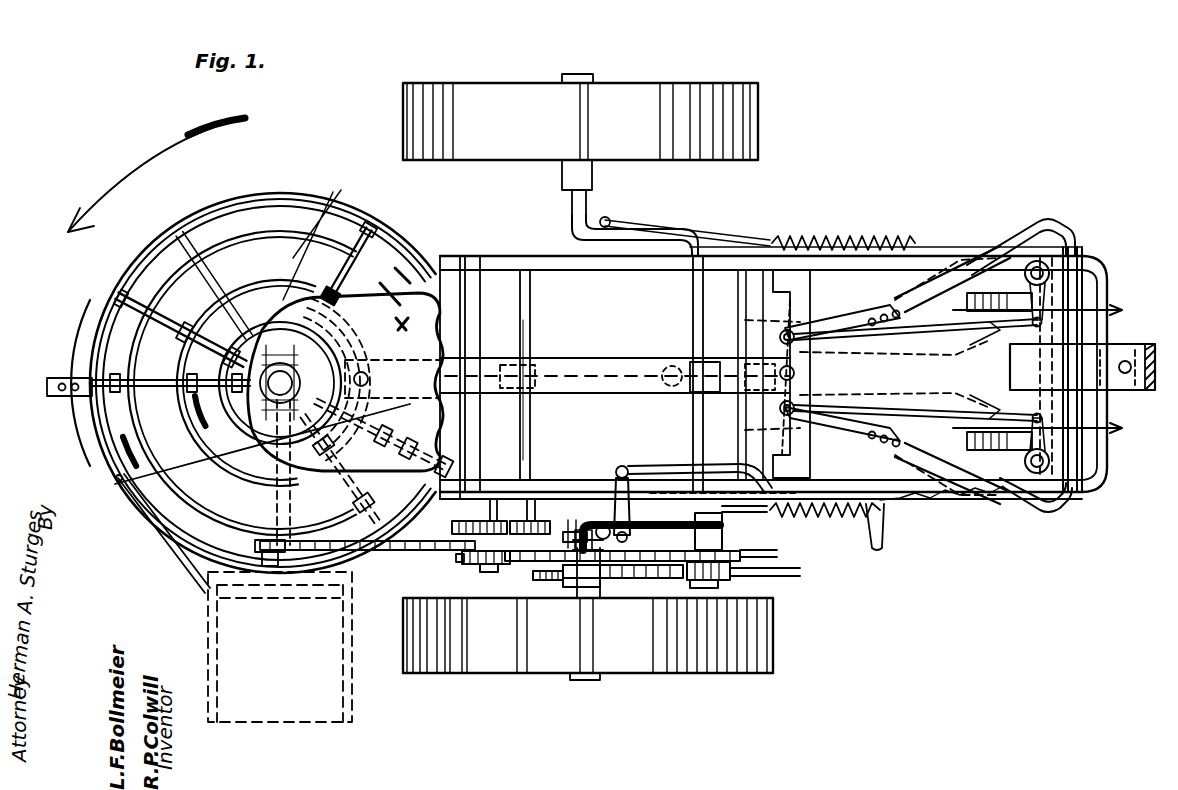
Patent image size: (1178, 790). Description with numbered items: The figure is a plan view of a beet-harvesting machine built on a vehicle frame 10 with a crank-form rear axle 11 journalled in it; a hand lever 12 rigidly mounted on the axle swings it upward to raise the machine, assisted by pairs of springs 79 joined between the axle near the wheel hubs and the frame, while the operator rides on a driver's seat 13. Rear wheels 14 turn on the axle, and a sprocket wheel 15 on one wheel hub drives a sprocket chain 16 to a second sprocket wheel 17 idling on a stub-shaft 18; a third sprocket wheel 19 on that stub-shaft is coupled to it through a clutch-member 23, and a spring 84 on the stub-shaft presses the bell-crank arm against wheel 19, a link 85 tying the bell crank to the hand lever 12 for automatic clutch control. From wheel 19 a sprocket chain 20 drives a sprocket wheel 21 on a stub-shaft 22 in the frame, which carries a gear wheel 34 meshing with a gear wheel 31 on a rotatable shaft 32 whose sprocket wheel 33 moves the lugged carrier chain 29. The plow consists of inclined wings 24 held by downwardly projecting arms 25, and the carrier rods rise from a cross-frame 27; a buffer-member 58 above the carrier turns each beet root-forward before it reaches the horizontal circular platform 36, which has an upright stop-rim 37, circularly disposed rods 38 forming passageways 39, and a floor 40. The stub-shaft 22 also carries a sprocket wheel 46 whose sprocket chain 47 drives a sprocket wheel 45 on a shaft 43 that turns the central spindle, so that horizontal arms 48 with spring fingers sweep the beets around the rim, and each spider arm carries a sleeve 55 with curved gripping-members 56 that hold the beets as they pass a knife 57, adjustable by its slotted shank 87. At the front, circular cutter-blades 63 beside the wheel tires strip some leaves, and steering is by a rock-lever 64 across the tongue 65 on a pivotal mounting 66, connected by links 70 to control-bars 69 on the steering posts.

The frame 10 is at (582, 270).
The rear axle 11 is at (692, 290).
The hand lever 12 is at (885, 540).
The driver's seat 13 is at (395, 300).
The rear wheels 14 is at (510, 150).
The sprocket wheel 15 is at (566, 559).
The sprocket chain 16 is at (625, 574).
The second sprocket wheel 17 is at (730, 570).
The stub-shaft 18 is at (690, 583).
The third sprocket wheel 19 is at (758, 548).
The sprocket chain 20 is at (530, 553).
The sprocket wheel 21 is at (463, 563).
The stub-shaft 22 is at (490, 573).
The clutch-member 23 is at (771, 567).
The inclined wings 24 is at (945, 285).
The arms 25 is at (1022, 240).
The cross-frame 27 is at (746, 318).
The sprocket chain 29 is at (582, 364).
The gear wheel 31 is at (548, 521).
The rotatable shaft 32 is at (532, 430).
The sprocket wheel 33 is at (505, 364).
The gear wheel 34 is at (452, 525).
The circular platform 36 is at (264, 359).
The stop-rim 37 is at (283, 193).
The rods 38 is at (184, 233).
The passageways 39 is at (270, 326).
The floor 40 is at (190, 556).
The shaft 43 is at (277, 500).
The sprocket wheel 45 is at (255, 548).
The sprocket wheel 46 is at (462, 556).
The sprocket chain 47 is at (410, 550).
The horizontal arms 48 is at (148, 298).
The sleeve 55 is at (340, 282).
The gripping-members 56 is at (120, 437).
The knife 57 is at (92, 372).
The buffer-member 58 is at (770, 432).
The circular cutter-blades 63 is at (1120, 444).
The rock-lever 64 is at (800, 345).
The tongue 65 is at (1125, 360).
The pivotal mounting 66 is at (800, 376).
The control-bars 69 is at (1030, 318).
The links 70 is at (1010, 326).
The springs 79 is at (835, 246).
The spring 84 is at (722, 530).
The link 85 is at (625, 469).
The shank 87 is at (47, 386).